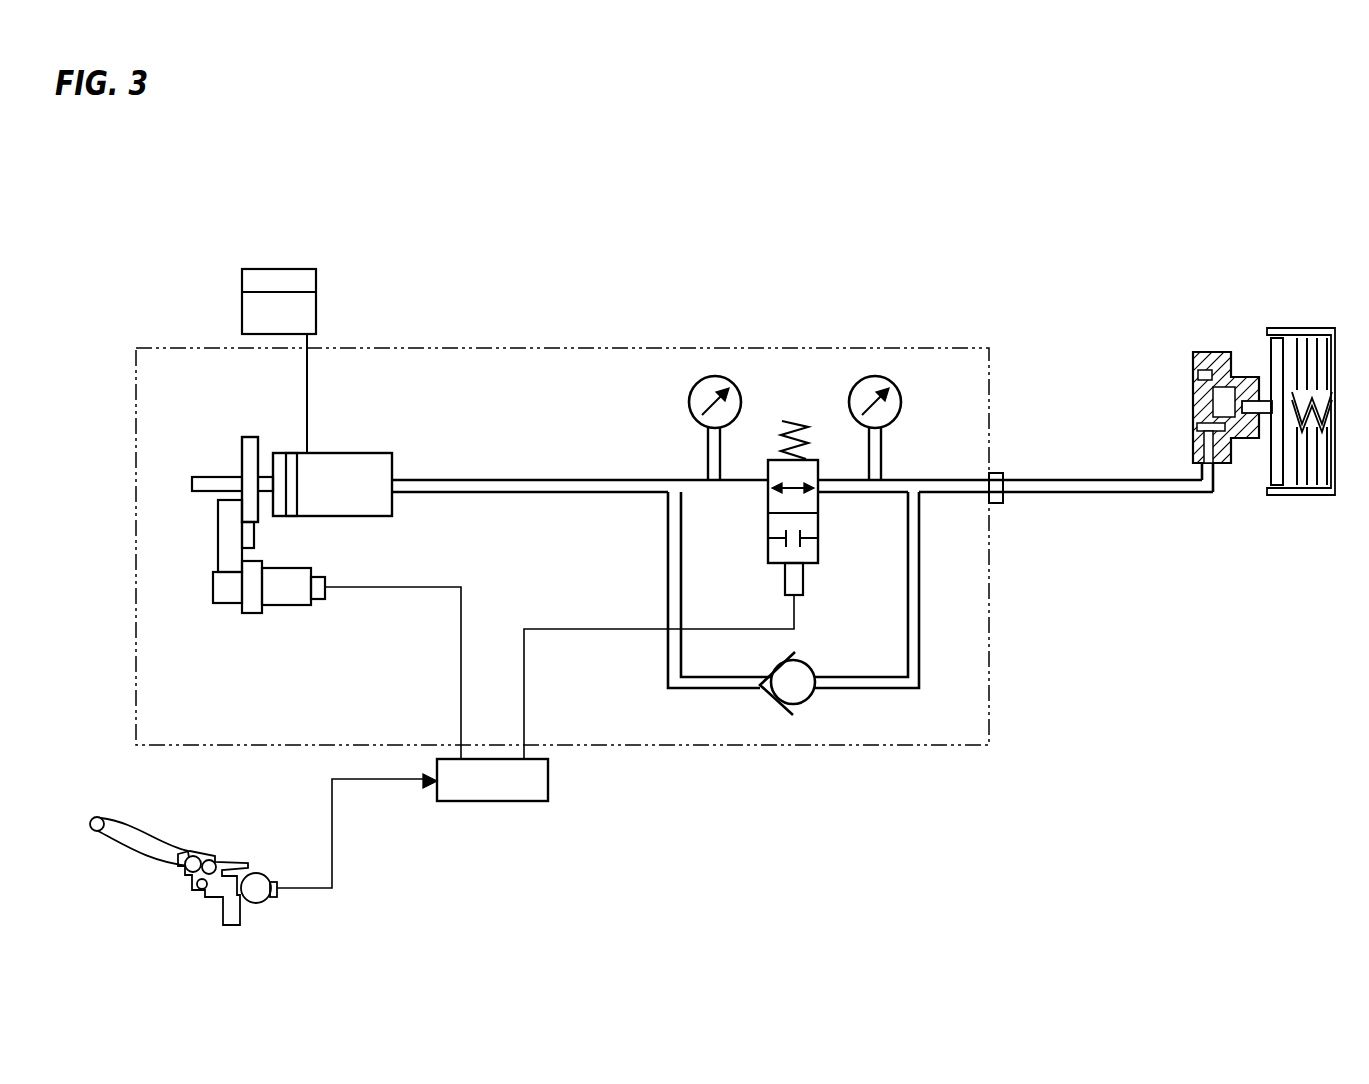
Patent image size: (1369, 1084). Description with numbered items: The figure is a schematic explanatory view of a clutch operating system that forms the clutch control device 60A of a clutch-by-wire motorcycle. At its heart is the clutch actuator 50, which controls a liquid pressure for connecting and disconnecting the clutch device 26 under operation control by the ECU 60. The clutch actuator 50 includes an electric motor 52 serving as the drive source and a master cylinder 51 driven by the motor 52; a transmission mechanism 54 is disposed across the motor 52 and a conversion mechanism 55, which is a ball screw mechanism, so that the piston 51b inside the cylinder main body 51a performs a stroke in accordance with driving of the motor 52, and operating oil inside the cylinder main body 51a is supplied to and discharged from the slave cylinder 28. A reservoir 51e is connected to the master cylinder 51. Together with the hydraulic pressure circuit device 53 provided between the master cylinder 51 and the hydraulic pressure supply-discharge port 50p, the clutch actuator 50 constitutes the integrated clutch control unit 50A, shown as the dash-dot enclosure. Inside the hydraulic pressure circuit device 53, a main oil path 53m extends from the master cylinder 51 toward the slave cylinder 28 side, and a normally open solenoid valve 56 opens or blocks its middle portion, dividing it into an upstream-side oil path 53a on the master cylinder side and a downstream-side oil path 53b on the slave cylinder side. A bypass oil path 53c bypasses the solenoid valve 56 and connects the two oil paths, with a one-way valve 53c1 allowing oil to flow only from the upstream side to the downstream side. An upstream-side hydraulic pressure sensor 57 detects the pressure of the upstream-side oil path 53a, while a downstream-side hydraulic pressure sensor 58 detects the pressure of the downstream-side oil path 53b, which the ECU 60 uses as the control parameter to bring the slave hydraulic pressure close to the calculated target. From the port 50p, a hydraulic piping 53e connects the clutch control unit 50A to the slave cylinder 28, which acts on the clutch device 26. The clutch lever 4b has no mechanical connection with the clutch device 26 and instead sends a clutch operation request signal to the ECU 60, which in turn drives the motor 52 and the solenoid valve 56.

The clutch control device 60A is at (1020, 166).
The clutch control unit 50A is at (419, 340).
The clutch actuator 50 is at (205, 377).
The reservoir 51e is at (289, 268).
The master cylinder 51 is at (318, 477).
The cylinder main body 51a is at (318, 477).
The piston 51b is at (292, 500).
The conversion mechanism 55 is at (247, 452).
The transmission mechanism 54 is at (222, 538).
The electric motor 52 is at (285, 607).
The hydraulic pressure circuit device 53 is at (568, 377).
The upstream-side oil path 53a is at (511, 479).
The main oil path 53m is at (797, 430).
The downstream-side oil path 53b is at (930, 479).
The bypass oil path 53c is at (884, 689).
The one-way valve 53c1 is at (810, 720).
The hydraulic piping 53e is at (1071, 480).
The solenoid valve 56 is at (825, 577).
The upstream-side hydraulic pressure sensor 57 is at (689, 396).
The downstream-side hydraulic pressure sensor 58 is at (849, 396).
The hydraulic pressure supply-discharge port 50p is at (997, 505).
The slave cylinder 28 is at (1206, 342).
The clutch device 26 is at (1321, 318).
The ECU 60 is at (488, 803).
The clutch lever 4b is at (145, 864).